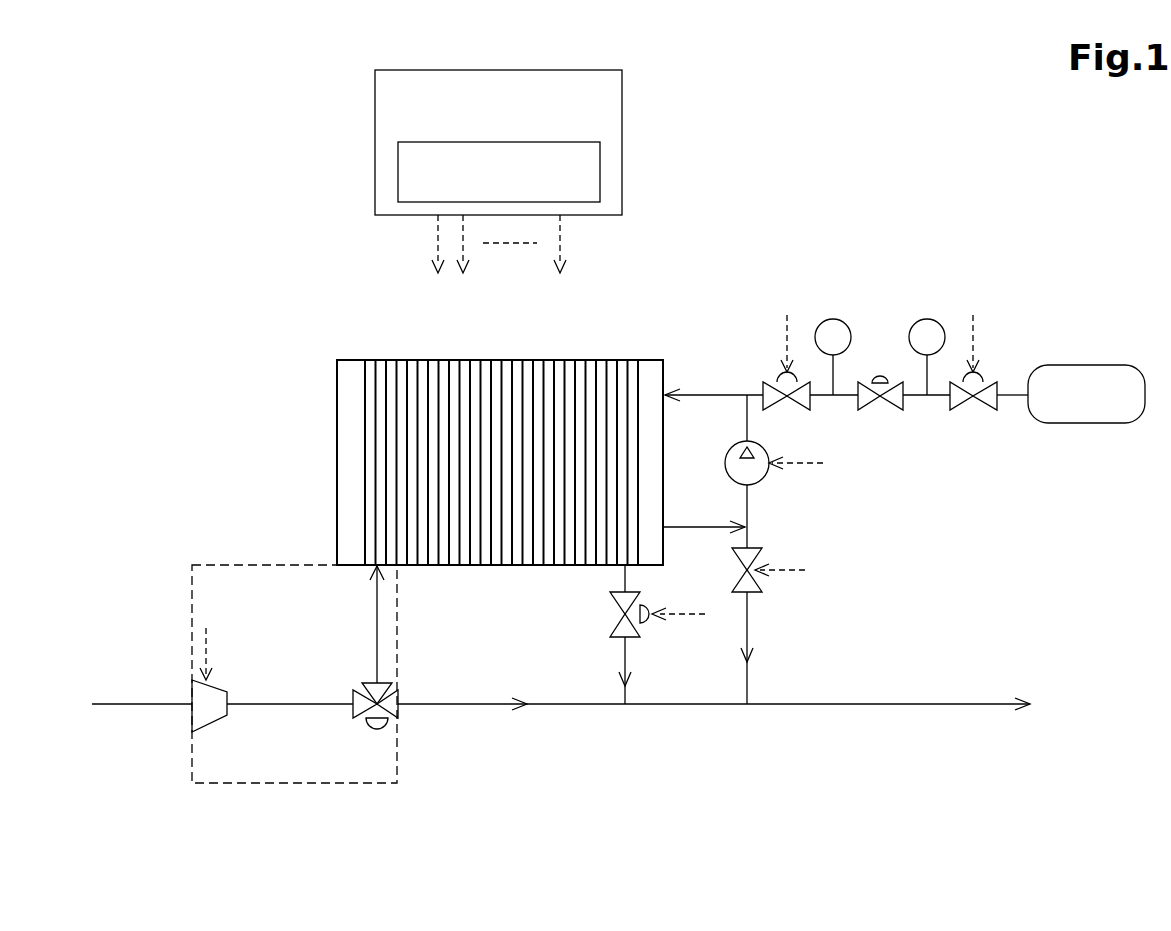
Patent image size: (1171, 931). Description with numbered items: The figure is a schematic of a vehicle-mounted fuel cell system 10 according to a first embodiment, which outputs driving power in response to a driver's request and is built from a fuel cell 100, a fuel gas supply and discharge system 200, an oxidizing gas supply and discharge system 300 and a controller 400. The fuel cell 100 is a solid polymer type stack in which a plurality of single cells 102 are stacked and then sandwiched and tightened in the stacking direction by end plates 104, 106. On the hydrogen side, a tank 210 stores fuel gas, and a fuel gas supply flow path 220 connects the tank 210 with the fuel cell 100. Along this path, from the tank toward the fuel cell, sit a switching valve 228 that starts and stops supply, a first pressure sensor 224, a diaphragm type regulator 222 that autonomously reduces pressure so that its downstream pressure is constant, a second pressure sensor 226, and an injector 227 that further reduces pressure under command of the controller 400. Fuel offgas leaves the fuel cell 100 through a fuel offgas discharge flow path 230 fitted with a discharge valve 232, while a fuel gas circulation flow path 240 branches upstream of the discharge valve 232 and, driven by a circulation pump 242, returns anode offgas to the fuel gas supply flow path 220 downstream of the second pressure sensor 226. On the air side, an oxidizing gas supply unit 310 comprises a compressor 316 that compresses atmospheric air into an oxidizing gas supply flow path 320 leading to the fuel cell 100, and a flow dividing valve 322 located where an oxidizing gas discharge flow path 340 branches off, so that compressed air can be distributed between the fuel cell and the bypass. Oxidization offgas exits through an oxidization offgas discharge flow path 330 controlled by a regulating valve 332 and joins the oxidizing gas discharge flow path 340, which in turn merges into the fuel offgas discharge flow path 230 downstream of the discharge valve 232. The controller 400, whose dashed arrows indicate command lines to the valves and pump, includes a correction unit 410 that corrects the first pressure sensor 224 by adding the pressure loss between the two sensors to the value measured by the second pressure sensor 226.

The fuel cell system 10 is at (130, 273).
The fuel cell 100 is at (470, 430).
The single cells 102 is at (486, 366).
The end plate 104 is at (352, 366).
The end plate 106 is at (652, 370).
The fuel gas supply and discharge system 200 is at (977, 293).
The tank 210 is at (1090, 365).
The fuel gas supply flow path 220 is at (714, 394).
The regulator 222 is at (889, 410).
The first pressure sensor 224 is at (929, 318).
The second pressure sensor 226 is at (835, 318).
The injector 227 is at (797, 410).
The switching valve 228 is at (983, 410).
The fuel offgas discharge flow path 230 is at (700, 526).
The discharge valve 232 is at (758, 553).
The fuel gas circulation flow path 240 is at (750, 500).
The circulation pump 242 is at (730, 462).
The oxidizing gas supply and discharge system 300 is at (137, 777).
The oxidizing gas supply unit 310 is at (245, 565).
The compressor 316 is at (228, 713).
The oxidizing gas supply flow path 320 is at (375, 625).
The flow dividing valve 322 is at (365, 728).
The oxidization offgas discharge flow path 330 is at (627, 580).
The regulating valve 332 is at (612, 604).
The oxidizing gas discharge flow path 340 is at (456, 703).
The controller 400 is at (622, 143).
The correction unit 410 is at (510, 142).